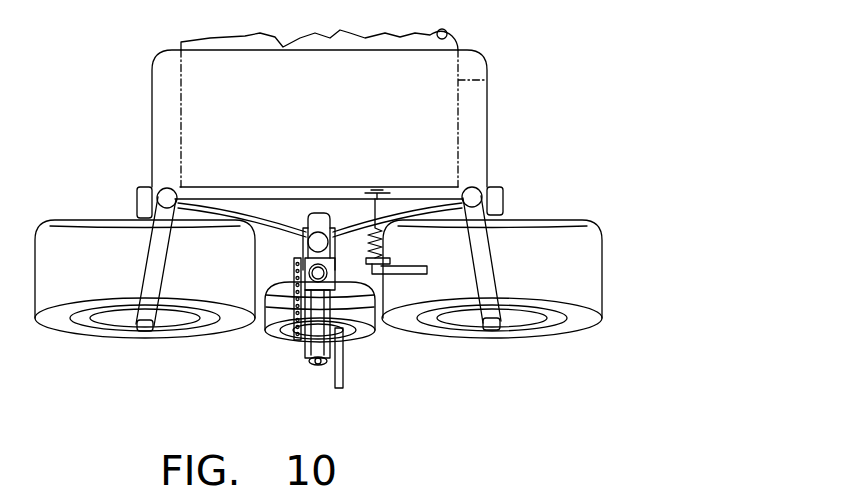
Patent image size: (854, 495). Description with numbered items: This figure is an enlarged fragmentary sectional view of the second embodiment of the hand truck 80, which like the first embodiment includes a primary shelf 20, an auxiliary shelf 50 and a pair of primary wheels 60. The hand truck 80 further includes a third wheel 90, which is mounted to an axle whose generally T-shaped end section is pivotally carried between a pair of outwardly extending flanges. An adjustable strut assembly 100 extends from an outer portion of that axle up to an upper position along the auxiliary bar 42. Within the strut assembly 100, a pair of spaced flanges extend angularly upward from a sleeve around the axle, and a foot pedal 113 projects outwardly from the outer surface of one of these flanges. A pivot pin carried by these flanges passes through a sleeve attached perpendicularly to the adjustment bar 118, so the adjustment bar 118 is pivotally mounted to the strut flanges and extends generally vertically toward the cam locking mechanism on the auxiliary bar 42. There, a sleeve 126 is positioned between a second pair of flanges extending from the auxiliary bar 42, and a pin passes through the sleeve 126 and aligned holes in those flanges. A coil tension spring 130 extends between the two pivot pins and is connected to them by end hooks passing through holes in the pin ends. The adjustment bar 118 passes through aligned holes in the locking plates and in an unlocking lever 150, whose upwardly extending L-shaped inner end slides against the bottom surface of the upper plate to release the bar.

The primary shelf 20 is at (487, 130).
The auxiliary shelf 50 is at (487, 80).
The hand truck 80 is at (478, 41).
The primary wheels 60 is at (602, 272).
The auxiliary bar 42 is at (292, 228).
The sleeve 126 is at (341, 246).
The third wheel 90 is at (370, 328).
The adjustment bar 118 is at (269, 340).
The coil tension spring 130 is at (288, 306).
The unlocking lever 150 is at (310, 372).
The foot pedal 113 is at (343, 368).
The adjustable strut assembly 100 is at (291, 358).